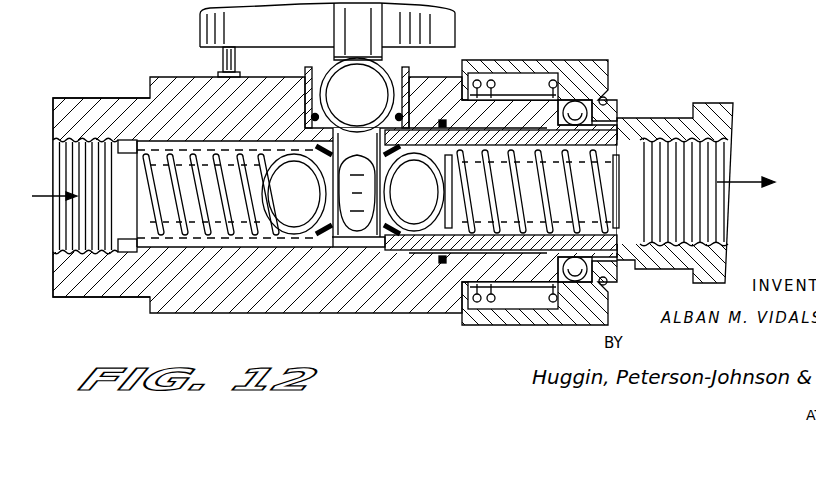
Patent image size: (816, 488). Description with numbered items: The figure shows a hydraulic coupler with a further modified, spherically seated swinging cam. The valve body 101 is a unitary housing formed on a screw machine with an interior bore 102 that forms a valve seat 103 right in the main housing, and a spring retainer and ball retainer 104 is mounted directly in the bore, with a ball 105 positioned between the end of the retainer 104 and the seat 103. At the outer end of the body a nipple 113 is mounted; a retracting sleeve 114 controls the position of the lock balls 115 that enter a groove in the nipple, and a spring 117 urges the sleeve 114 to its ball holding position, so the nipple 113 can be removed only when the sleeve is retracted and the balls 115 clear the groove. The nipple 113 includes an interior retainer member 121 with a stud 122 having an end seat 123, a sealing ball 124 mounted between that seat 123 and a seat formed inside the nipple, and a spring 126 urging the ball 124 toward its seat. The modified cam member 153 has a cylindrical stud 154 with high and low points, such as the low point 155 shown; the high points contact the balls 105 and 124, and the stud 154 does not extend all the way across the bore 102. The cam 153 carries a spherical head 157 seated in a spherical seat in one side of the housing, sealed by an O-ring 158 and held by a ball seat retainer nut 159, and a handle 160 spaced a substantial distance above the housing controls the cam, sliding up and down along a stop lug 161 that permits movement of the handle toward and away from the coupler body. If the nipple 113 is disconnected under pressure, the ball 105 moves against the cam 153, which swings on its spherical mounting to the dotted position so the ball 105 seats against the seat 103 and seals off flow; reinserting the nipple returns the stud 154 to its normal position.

The valve body 101 is at (98, 282).
The interior bore 102 is at (200, 253).
The valve seat 103 is at (268, 262).
The spring retainer and ball retainer 104 is at (218, 225).
The ball 105 is at (308, 193).
The nipple 113 is at (718, 106).
The retracting sleeve 114 is at (609, 70).
The lock balls 115 is at (578, 100).
The spring 117 is at (492, 82).
The interior retainer member 121 is at (633, 199).
The stud 122 is at (632, 201).
The end seat 123 is at (404, 235).
The sealing ball 124 is at (415, 250).
The spring 126 is at (606, 130).
The modified cam member 153 is at (327, 253).
The cylindrical stud 154 is at (345, 240).
The low point 155 is at (383, 257).
The spherical head 157 is at (376, 105).
The O-ring 158 is at (311, 117).
The ball seat retainer nut 159 is at (305, 72).
The handle 160 is at (200, 22).
The stop lug 161 is at (218, 63).